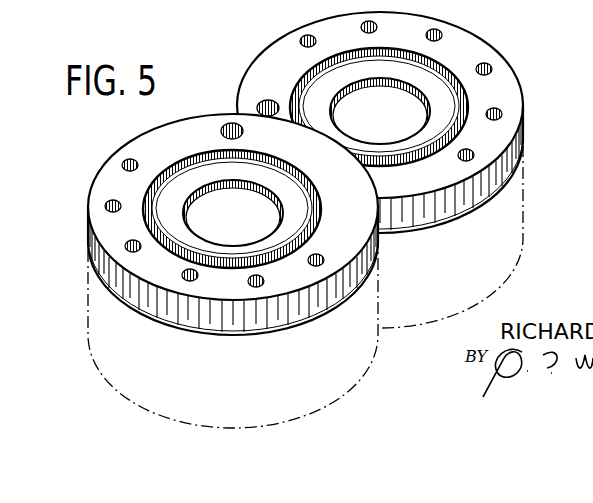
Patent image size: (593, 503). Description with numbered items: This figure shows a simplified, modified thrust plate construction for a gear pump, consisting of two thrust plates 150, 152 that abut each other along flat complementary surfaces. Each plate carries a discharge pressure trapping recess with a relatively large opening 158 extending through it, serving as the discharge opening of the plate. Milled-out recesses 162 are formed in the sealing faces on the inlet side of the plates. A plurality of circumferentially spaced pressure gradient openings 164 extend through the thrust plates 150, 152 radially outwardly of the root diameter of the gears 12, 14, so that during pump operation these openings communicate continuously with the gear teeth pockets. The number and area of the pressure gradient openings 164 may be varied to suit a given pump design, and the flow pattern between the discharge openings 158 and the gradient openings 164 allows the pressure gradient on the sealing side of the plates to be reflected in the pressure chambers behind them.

The gear 12 is at (506, 263).
The gear 14 is at (95, 345).
The thrust plate 150 is at (508, 77).
The thrust plate 152 is at (92, 190).
The opening 158 is at (257, 108).
The milled-out recess 162 is at (379, 273).
The pressure gradient opening 164 is at (126, 246).